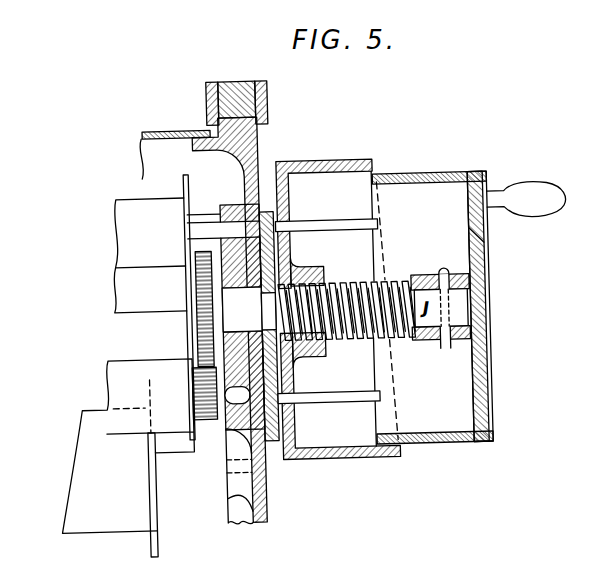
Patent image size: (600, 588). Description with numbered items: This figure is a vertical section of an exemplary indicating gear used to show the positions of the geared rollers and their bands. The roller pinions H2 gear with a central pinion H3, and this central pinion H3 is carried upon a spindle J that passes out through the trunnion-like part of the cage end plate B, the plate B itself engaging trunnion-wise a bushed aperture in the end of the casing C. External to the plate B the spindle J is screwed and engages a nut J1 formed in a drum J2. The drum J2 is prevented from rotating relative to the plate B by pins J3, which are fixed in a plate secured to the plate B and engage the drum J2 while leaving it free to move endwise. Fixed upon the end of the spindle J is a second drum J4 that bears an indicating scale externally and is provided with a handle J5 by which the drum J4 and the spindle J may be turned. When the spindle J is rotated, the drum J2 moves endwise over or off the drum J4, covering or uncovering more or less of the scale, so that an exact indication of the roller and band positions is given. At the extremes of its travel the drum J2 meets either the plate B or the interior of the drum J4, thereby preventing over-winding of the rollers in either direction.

The casing C is at (183, 132).
The end plate B is at (258, 144).
The spindle J is at (318, 311).
The nut J1 is at (302, 265).
The drum J2 is at (341, 160).
The pins J3 is at (347, 211).
The second drum J4 is at (449, 178).
The handle J5 is at (525, 199).
The pinion H2 is at (205, 407).
The central pinion H3 is at (205, 328).